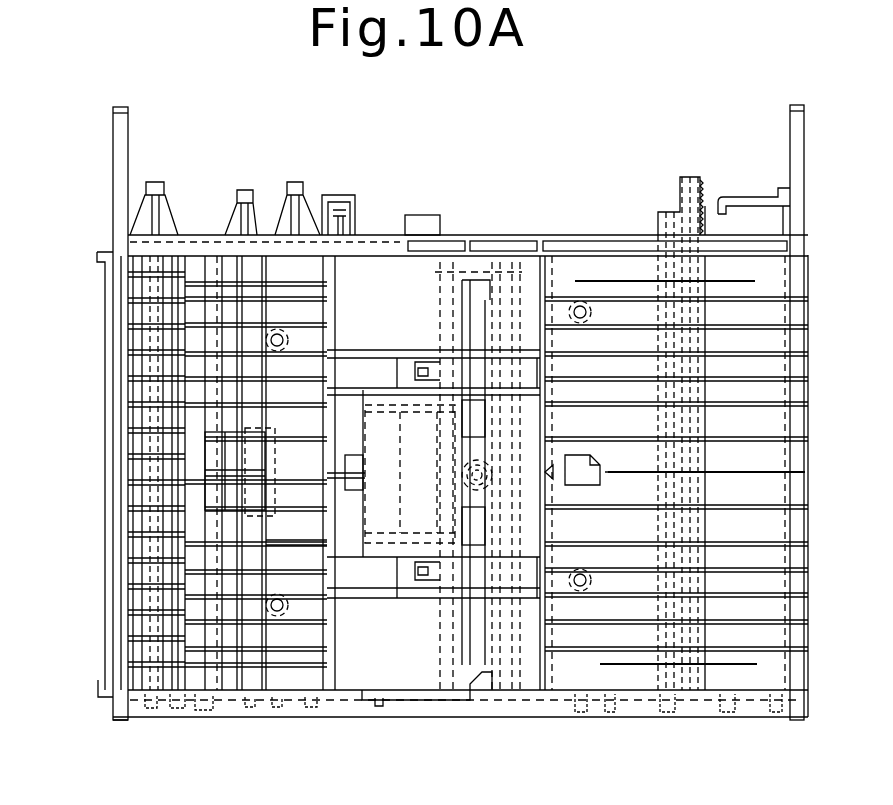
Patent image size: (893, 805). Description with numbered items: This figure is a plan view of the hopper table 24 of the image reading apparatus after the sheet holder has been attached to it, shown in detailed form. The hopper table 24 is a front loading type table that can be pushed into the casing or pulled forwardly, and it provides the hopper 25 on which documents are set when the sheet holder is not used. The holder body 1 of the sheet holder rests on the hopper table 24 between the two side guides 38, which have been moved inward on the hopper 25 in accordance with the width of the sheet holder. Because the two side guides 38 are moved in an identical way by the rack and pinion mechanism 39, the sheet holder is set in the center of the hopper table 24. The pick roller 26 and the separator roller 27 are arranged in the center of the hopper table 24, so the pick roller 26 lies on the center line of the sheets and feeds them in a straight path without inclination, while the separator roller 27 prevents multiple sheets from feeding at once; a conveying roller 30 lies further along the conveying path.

The holder body 1 is at (381, 430).
The hopper table 24 is at (495, 183).
The hopper 25 is at (770, 462).
The pick roller 26 is at (303, 545).
The separator roller 27 is at (250, 485).
The conveying roller 30 is at (108, 538).
The side guides 38 is at (358, 365).
The rack and pinion mechanism 39 is at (522, 287).